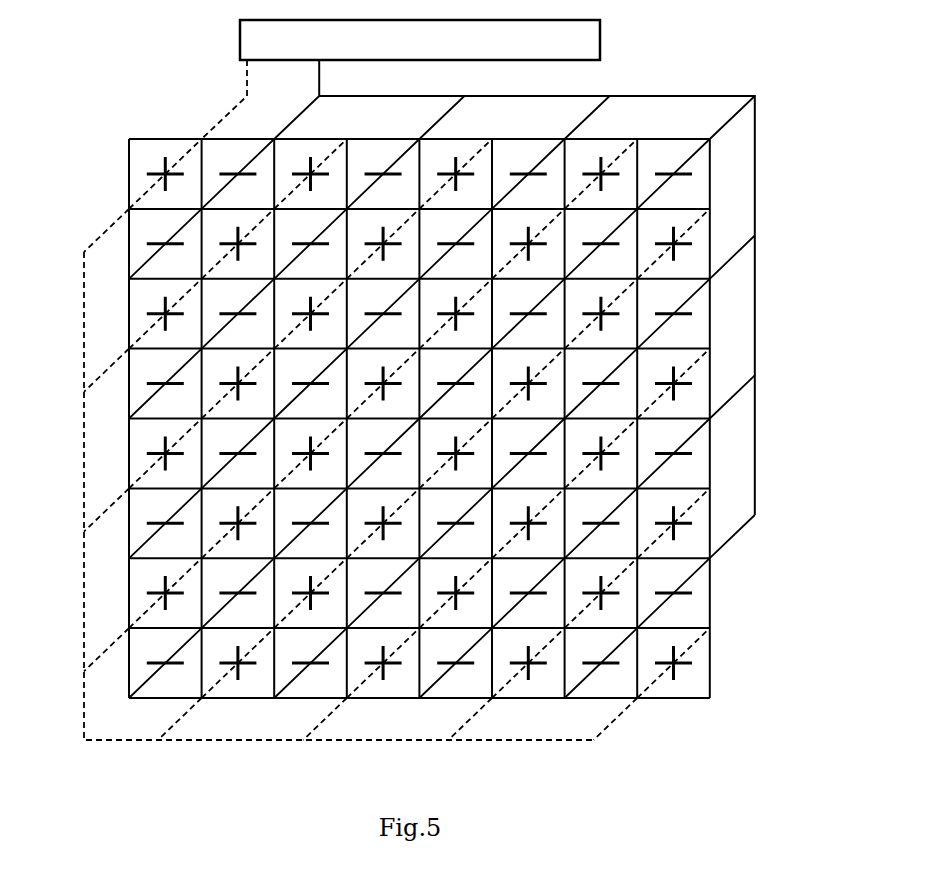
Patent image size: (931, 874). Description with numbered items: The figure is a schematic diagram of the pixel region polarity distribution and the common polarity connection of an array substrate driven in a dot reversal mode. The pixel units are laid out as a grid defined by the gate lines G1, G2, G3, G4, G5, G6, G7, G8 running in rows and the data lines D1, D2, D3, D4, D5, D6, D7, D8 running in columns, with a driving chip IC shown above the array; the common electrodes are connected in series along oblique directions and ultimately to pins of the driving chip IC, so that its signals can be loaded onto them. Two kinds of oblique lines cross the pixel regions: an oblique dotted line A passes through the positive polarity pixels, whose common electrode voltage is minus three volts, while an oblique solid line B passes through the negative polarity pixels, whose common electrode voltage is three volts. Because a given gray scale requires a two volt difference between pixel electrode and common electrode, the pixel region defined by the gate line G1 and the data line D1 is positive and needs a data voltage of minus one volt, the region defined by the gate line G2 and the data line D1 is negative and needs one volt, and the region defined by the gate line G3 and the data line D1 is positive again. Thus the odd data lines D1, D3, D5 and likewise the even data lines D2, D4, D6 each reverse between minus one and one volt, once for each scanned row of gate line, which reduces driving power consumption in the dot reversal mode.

The driving chip IC is at (404, 40).
The oblique dotted line A is at (224, 99).
The oblique solid line B is at (514, 287).
The data line D1 is at (133, 405).
The data line D2 is at (203, 405).
The data line D3 is at (277, 405).
The data line D4 is at (349, 405).
The data line D5 is at (416, 405).
The data line D6 is at (491, 405).
The data line D7 is at (563, 405).
The data line D8 is at (637, 405).
The gate line G1 is at (403, 140).
The gate line G2 is at (403, 210).
The gate line G3 is at (403, 280).
The gate line G4 is at (403, 349).
The gate line G5 is at (403, 419).
The gate line G6 is at (403, 489).
The gate line G7 is at (403, 559).
The gate line G8 is at (403, 629).